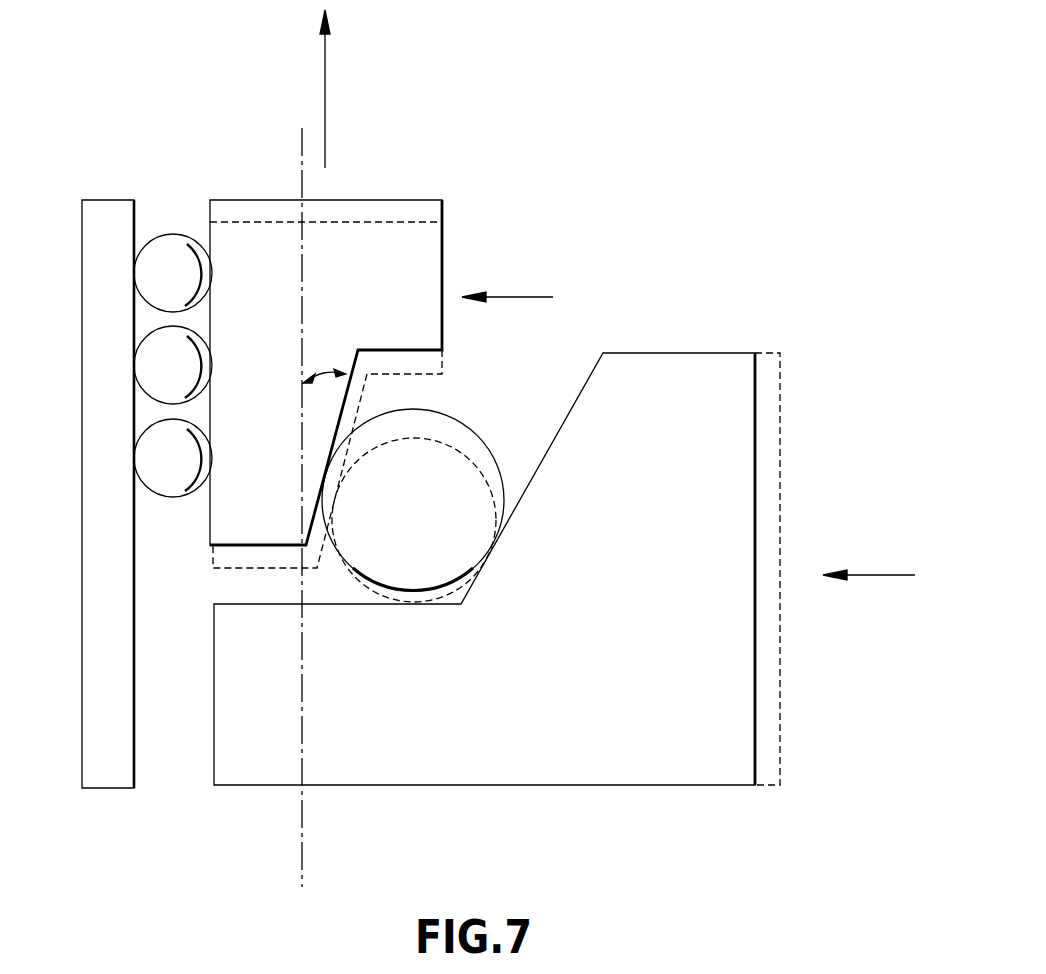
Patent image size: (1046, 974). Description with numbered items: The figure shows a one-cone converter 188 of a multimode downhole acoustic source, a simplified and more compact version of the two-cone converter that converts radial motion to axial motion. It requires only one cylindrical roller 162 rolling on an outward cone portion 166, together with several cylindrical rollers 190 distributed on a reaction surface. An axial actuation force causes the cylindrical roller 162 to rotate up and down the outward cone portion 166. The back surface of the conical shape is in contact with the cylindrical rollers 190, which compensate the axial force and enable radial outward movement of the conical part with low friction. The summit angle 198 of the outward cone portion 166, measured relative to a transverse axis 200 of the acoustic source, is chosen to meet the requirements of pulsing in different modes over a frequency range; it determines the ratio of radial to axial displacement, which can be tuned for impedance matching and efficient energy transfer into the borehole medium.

The cylindrical roller 162 is at (437, 517).
The outward cone portion 166 is at (425, 283).
The one-cone converter 188 is at (720, 233).
The cylindrical rollers 190 is at (152, 280).
The summit angle 198 is at (323, 371).
The transverse axis 200 is at (301, 182).